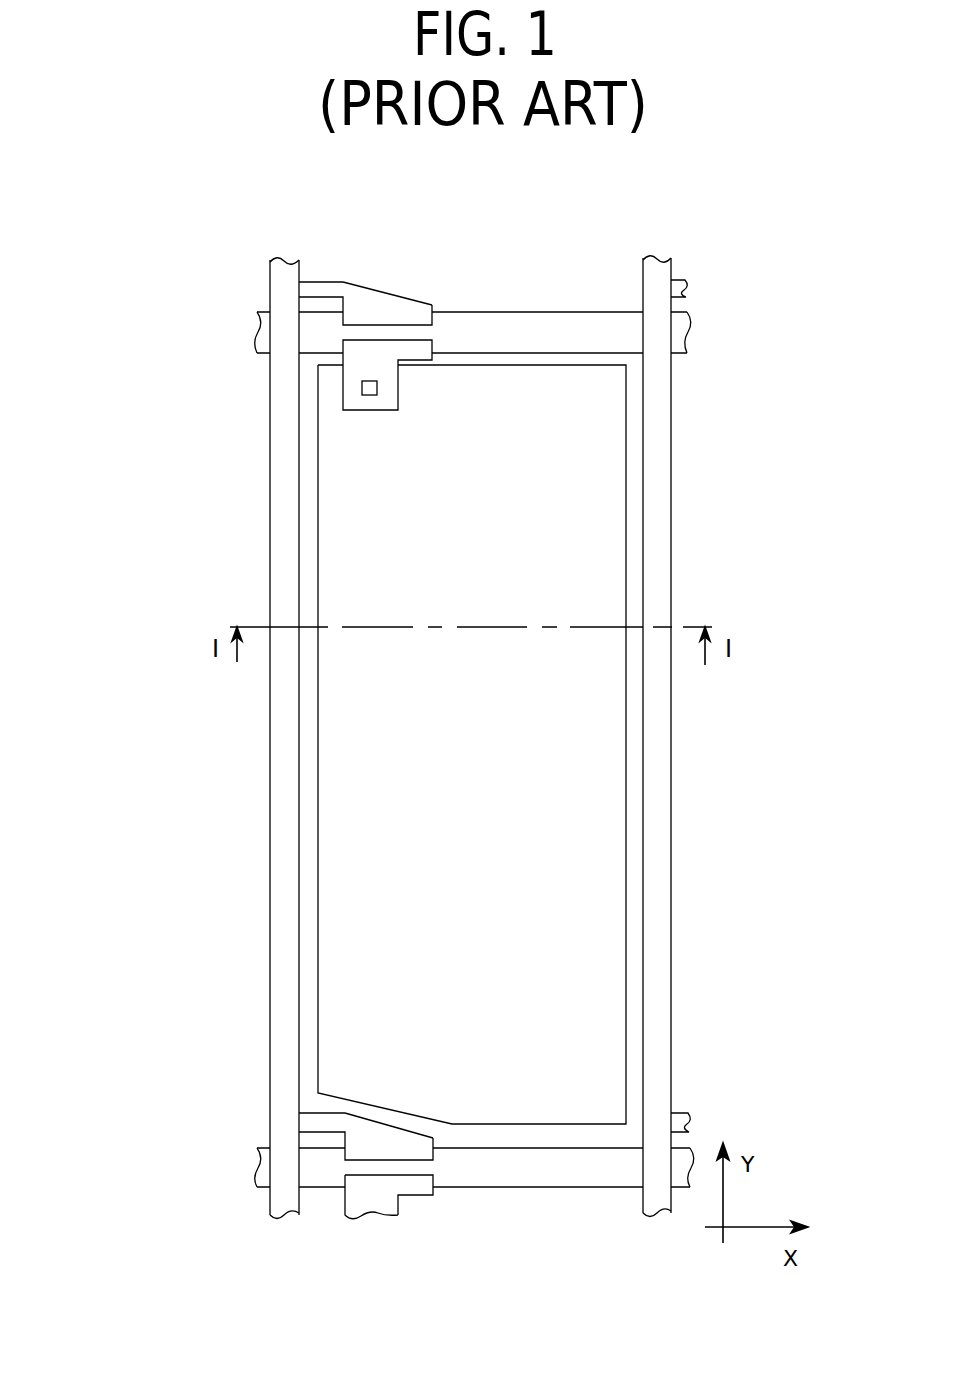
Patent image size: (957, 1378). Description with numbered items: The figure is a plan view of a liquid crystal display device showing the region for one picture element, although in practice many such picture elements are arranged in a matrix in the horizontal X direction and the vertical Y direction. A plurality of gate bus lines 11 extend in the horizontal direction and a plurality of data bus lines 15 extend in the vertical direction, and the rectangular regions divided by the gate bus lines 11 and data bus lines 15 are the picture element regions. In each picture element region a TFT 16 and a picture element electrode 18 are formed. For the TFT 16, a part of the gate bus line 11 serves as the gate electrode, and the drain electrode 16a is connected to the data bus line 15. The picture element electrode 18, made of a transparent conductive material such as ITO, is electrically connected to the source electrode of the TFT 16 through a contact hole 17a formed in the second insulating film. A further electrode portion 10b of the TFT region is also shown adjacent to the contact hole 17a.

The data bus line 15 is at (283, 268).
The gate bus line 11 is at (257, 316).
The TFT 16 is at (397, 693).
The drain electrode 16a is at (387, 303).
The drain electrode 10b is at (418, 355).
The contact hole 17a is at (370, 395).
The picture element electrode 18 is at (603, 490).